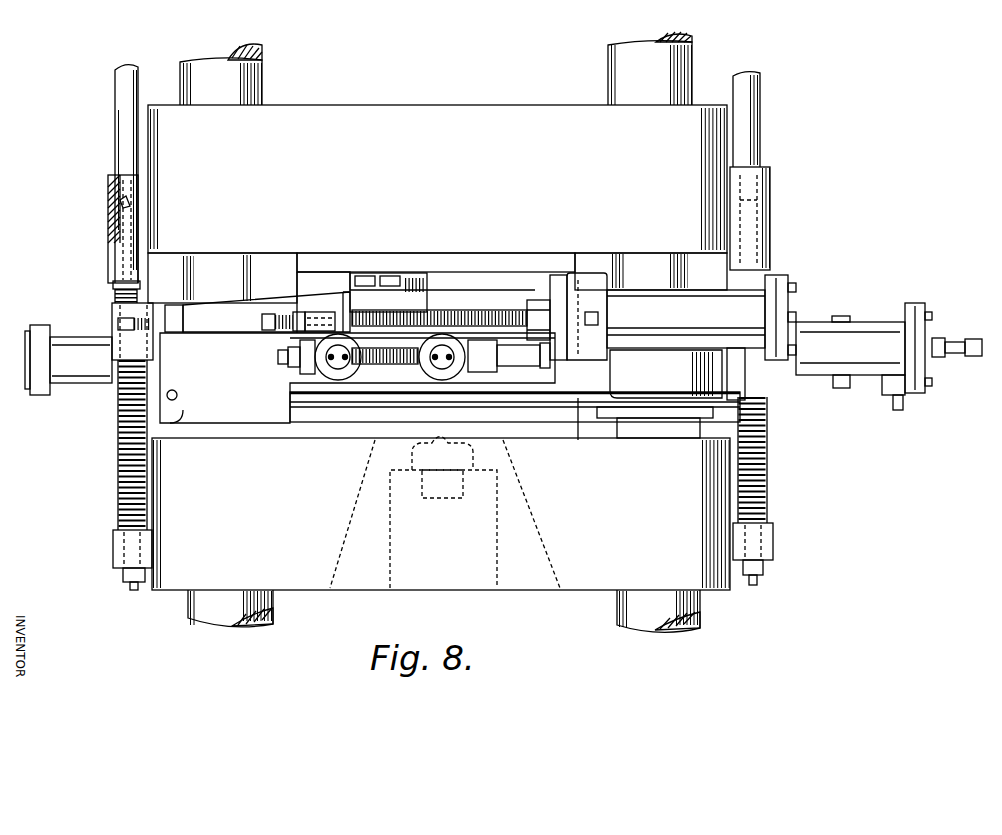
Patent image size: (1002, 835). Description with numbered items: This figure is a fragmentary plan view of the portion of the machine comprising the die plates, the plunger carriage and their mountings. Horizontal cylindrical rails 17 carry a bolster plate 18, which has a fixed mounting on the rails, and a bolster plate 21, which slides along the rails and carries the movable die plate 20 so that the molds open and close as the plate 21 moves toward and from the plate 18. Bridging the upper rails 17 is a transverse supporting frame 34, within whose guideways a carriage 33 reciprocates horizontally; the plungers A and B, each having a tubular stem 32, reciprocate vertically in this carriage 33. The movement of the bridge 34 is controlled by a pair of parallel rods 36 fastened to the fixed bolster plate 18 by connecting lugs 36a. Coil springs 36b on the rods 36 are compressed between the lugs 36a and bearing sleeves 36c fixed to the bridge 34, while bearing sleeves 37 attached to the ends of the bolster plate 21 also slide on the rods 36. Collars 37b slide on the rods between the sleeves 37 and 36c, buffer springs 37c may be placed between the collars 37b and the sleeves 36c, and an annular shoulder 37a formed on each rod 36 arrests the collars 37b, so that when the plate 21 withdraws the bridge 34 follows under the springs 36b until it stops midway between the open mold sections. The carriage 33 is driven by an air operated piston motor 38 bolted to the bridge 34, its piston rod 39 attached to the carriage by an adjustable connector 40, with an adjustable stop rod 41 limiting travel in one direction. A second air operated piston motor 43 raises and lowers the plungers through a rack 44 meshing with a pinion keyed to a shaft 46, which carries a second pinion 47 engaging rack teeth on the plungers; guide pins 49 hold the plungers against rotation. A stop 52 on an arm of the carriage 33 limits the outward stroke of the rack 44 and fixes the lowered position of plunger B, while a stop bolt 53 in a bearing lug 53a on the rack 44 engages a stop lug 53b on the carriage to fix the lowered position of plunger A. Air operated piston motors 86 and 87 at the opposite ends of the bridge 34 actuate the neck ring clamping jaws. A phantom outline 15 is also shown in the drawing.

The phantom outline of sheet material / form 15 is at (460, 440).
The horizontal cylindrical rails 17 is at (250, 76).
The bolster plate 18 is at (591, 578).
The movable die plate 20 is at (530, 263).
The bolster plate 21 is at (537, 110).
The tubular stem 32 is at (447, 346).
The carriage 33 is at (407, 378).
The transverse supporting frame 34 is at (548, 395).
The parallel rods 36 is at (118, 487).
The connecting lugs 36a is at (118, 549).
The coil springs 36b is at (121, 449).
The bearing sleeves 36c is at (113, 311).
The bearing sleeves 37 is at (123, 205).
The annular shoulder 37a is at (120, 200).
The collars 37b is at (115, 284).
The buffer springs 37c is at (116, 292).
The air operated piston motor 38 is at (880, 338).
The piston rod 39 is at (677, 374).
The adjustable connector 40 is at (524, 357).
The adjustable stop rod 41 is at (969, 334).
The air operated piston motor 43 is at (735, 316).
The rack 44 is at (498, 310).
The shaft 46 is at (404, 312).
The second pinion 47 is at (386, 367).
The guide pins 49 is at (279, 358).
The stop 52 is at (186, 324).
The stop bolt 53 is at (285, 313).
The bearing lug 53a is at (320, 312).
The stop lug 53b is at (348, 316).
The air operated piston motor 86 is at (88, 370).
The air operated piston motor 87 is at (843, 389).
The plunger A is at (452, 372).
The plunger B is at (347, 372).